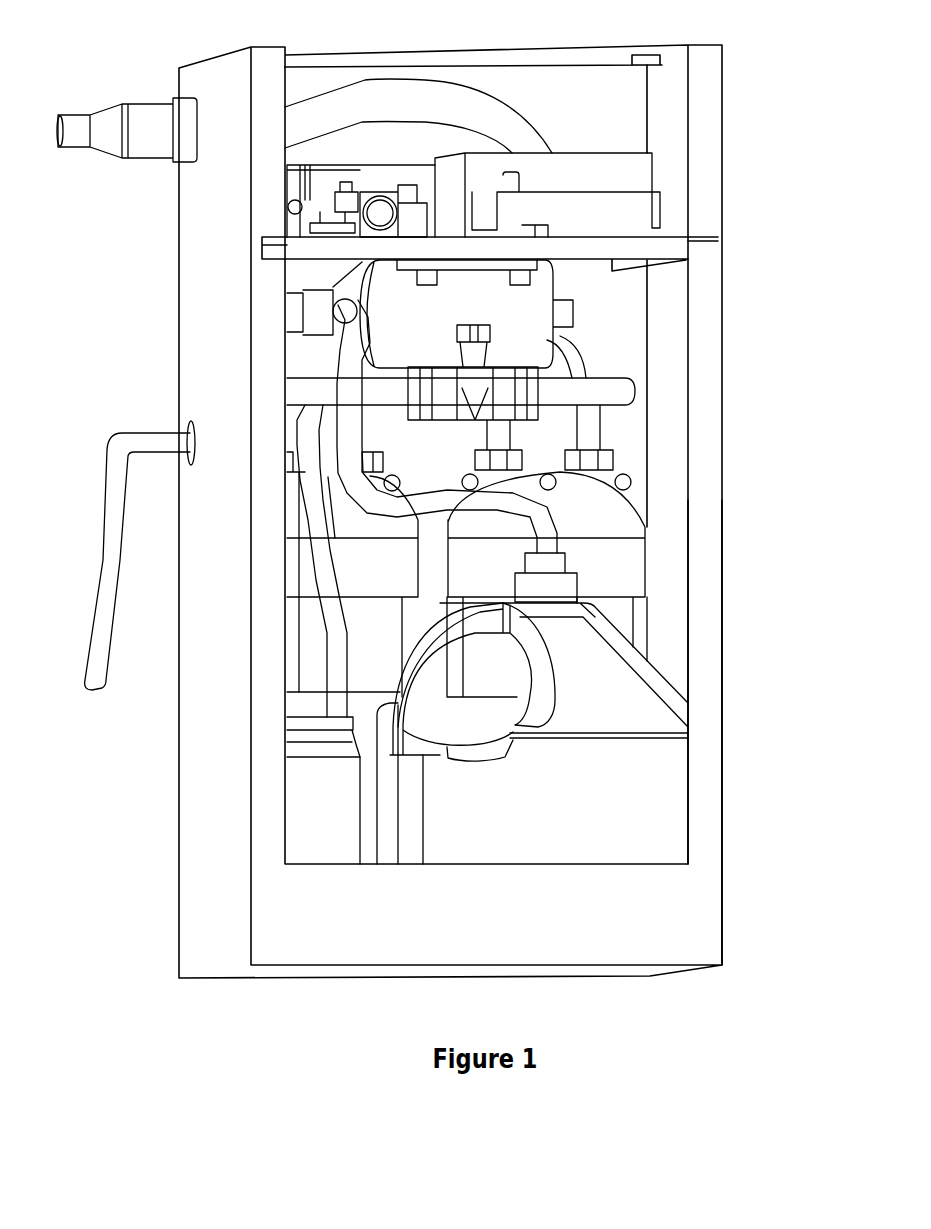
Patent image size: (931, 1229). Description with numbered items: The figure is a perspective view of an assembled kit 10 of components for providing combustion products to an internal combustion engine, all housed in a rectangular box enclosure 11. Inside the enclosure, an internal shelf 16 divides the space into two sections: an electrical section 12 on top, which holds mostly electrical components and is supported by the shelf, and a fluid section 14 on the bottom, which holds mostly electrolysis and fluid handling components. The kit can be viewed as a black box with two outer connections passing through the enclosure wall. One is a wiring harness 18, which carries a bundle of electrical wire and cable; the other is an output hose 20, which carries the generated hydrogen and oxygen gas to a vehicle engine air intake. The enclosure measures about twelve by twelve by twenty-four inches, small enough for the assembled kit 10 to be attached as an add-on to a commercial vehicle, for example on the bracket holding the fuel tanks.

The assembled kit 10 is at (451, 495).
The box enclosure 11 is at (698, 362).
The electrical section 12 is at (778, 130).
The fluid section 14 is at (728, 559).
The internal shelf 16 is at (675, 250).
The wiring harness 18 is at (80, 120).
The output hose 20 is at (130, 440).